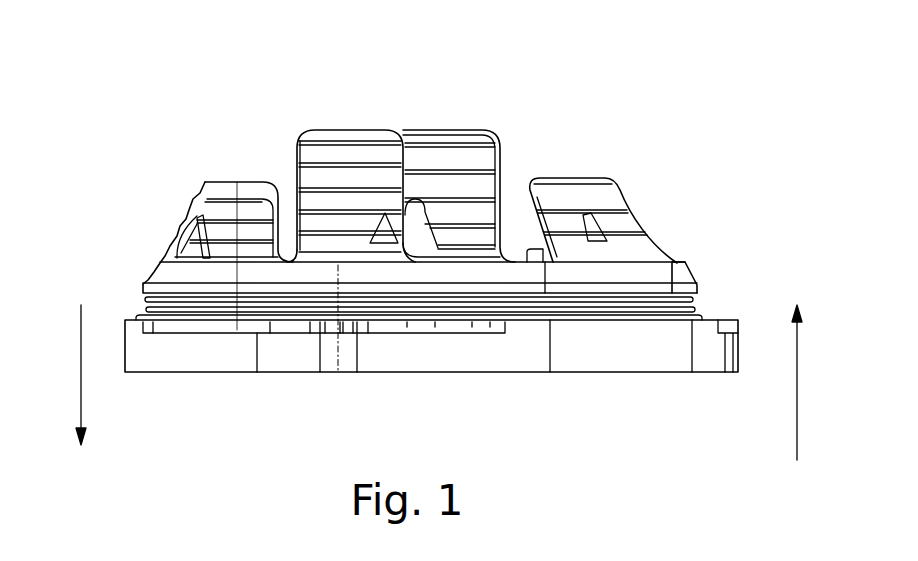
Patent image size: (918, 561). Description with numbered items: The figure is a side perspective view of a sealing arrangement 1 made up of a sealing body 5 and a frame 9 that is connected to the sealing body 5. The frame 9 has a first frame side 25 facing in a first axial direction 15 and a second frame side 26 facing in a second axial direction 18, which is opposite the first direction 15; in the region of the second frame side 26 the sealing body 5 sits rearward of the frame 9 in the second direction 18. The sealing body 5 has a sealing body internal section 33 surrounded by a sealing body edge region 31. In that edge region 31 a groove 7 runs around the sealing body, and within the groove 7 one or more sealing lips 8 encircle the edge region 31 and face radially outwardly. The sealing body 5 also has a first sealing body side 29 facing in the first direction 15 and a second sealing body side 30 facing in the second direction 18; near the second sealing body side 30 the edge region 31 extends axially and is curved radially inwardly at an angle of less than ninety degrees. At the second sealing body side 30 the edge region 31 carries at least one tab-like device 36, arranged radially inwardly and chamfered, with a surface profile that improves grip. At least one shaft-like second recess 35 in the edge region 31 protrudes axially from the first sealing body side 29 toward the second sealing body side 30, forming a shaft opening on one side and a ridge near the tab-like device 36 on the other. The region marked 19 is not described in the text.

The sealing arrangement 1 is at (223, 132).
The sealing body 5 is at (674, 272).
The groove 7 is at (111, 298).
The sealing lip 8 is at (691, 302).
The frame 9 is at (605, 342).
The first axial direction 15 is at (82, 400).
The second axial direction 18 is at (797, 393).
The inner flange 19 is at (280, 374).
The first frame side 25 is at (505, 374).
The second frame side 26 is at (131, 321).
The first sealing body side 29 is at (338, 378).
The second sealing body side 30 is at (497, 130).
The sealing body edge region 31 is at (691, 267).
The sealing body internal section 33 is at (477, 249).
The shaft-like second recess 35 is at (596, 220).
The tab-like device 36 is at (332, 140).